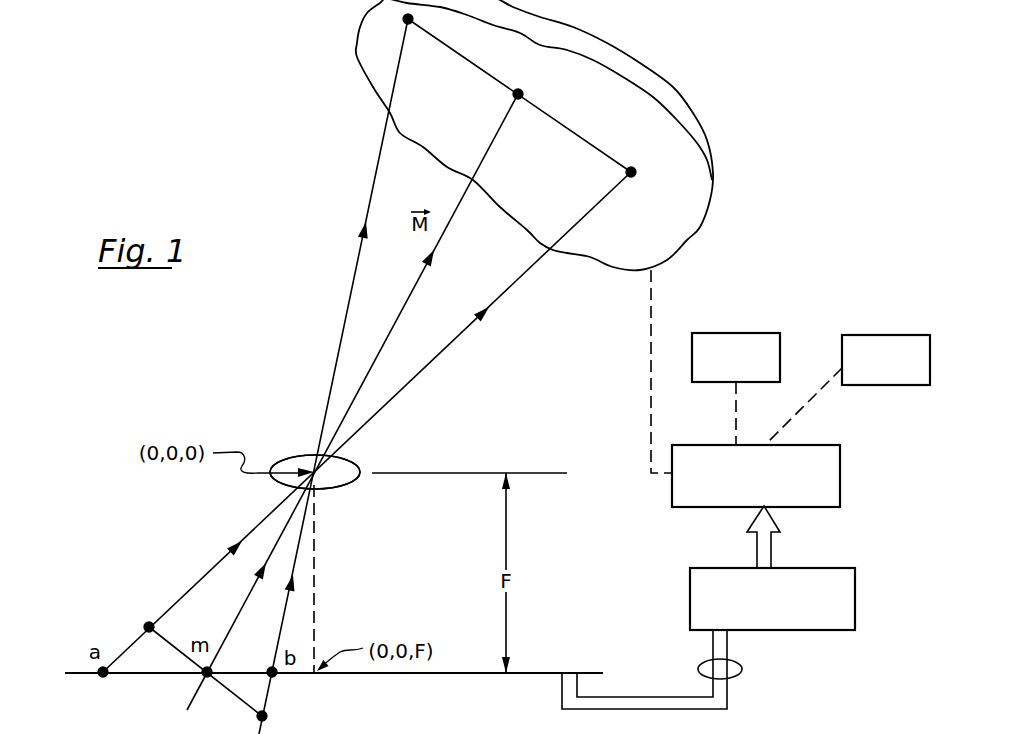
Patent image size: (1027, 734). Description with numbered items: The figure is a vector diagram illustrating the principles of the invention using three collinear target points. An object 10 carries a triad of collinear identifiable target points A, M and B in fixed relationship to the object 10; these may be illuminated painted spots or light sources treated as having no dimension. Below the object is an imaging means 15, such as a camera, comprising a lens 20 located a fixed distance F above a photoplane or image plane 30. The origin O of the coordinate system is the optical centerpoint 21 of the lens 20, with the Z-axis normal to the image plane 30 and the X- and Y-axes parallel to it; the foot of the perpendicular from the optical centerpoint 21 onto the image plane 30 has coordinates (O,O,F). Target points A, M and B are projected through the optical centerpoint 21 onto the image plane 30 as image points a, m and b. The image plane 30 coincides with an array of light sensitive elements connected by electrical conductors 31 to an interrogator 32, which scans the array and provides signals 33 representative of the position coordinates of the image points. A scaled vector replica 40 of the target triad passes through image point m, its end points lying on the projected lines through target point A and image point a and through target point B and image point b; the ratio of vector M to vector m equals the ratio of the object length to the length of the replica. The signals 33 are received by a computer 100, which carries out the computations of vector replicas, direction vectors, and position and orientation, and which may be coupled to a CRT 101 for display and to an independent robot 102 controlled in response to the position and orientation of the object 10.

The object 10 is at (593, 48).
The imaging means 15 is at (382, 580).
The lens 20 is at (275, 458).
The optical centerpoint 21 is at (340, 468).
The image plane 30 is at (537, 673).
The electrical conductors 31 is at (742, 668).
The interrogator 32 is at (855, 598).
The signals 33 is at (772, 543).
The scaled vector replica 40 is at (172, 628).
The computer 100 is at (842, 473).
The CRT 101 is at (880, 335).
The robot 102 is at (748, 333).